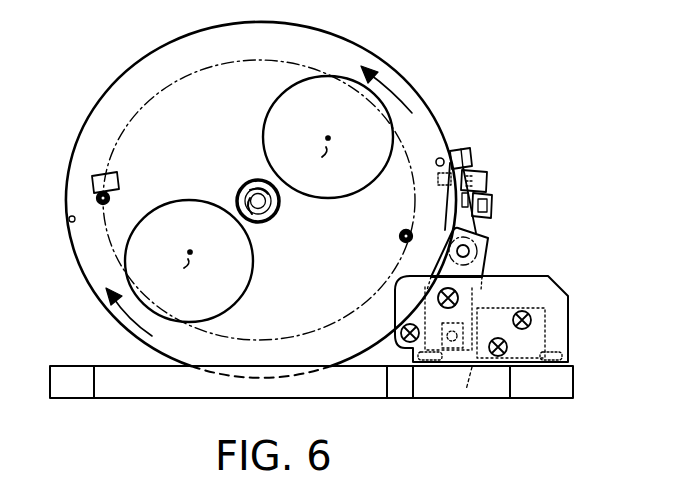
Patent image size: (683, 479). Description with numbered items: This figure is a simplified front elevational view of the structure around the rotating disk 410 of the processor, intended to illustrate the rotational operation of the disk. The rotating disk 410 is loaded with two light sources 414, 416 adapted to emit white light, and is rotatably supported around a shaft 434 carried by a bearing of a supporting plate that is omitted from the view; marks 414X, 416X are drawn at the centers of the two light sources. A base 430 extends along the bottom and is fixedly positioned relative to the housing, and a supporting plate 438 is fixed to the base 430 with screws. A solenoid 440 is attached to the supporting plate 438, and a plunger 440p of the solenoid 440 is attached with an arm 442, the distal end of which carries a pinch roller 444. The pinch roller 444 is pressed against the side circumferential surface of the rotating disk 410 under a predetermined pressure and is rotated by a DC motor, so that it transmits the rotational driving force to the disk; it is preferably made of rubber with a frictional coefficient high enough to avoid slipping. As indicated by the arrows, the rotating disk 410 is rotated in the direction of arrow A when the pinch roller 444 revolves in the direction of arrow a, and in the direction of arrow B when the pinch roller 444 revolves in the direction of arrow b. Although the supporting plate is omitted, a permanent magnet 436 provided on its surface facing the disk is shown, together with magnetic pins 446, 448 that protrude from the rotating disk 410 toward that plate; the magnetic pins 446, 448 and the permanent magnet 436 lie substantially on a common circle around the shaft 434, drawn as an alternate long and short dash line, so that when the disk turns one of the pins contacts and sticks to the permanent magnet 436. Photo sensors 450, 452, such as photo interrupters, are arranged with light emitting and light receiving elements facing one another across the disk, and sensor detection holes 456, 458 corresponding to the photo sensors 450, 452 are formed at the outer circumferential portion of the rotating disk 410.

The rotating disk 410 is at (168, 56).
The light source 416 is at (285, 110).
The center of upper opening 416X is at (338, 160).
The light source 414 is at (232, 296).
The center of lower opening 414X is at (197, 244).
The shaft 434 is at (275, 217).
The permanent magnet 436 is at (118, 178).
The magnetic pin 446 is at (97, 196).
The sensor detection hole 458 is at (69, 225).
The magnetic pin 448 is at (401, 242).
The sensor detection hole 456 is at (444, 158).
The photo sensor 450 is at (463, 150).
The photo sensor 452 is at (483, 171).
The pinch roller 444 is at (487, 230).
The arm 442 is at (484, 270).
The solenoid 440 is at (545, 308).
The plunger 440p is at (466, 390).
The supporting plate 438 is at (562, 328).
The base 430 is at (147, 386).
The arrow A is at (117, 318).
The arrow B is at (390, 87).
The arrow a is at (378, 265).
The arrow b is at (492, 256).